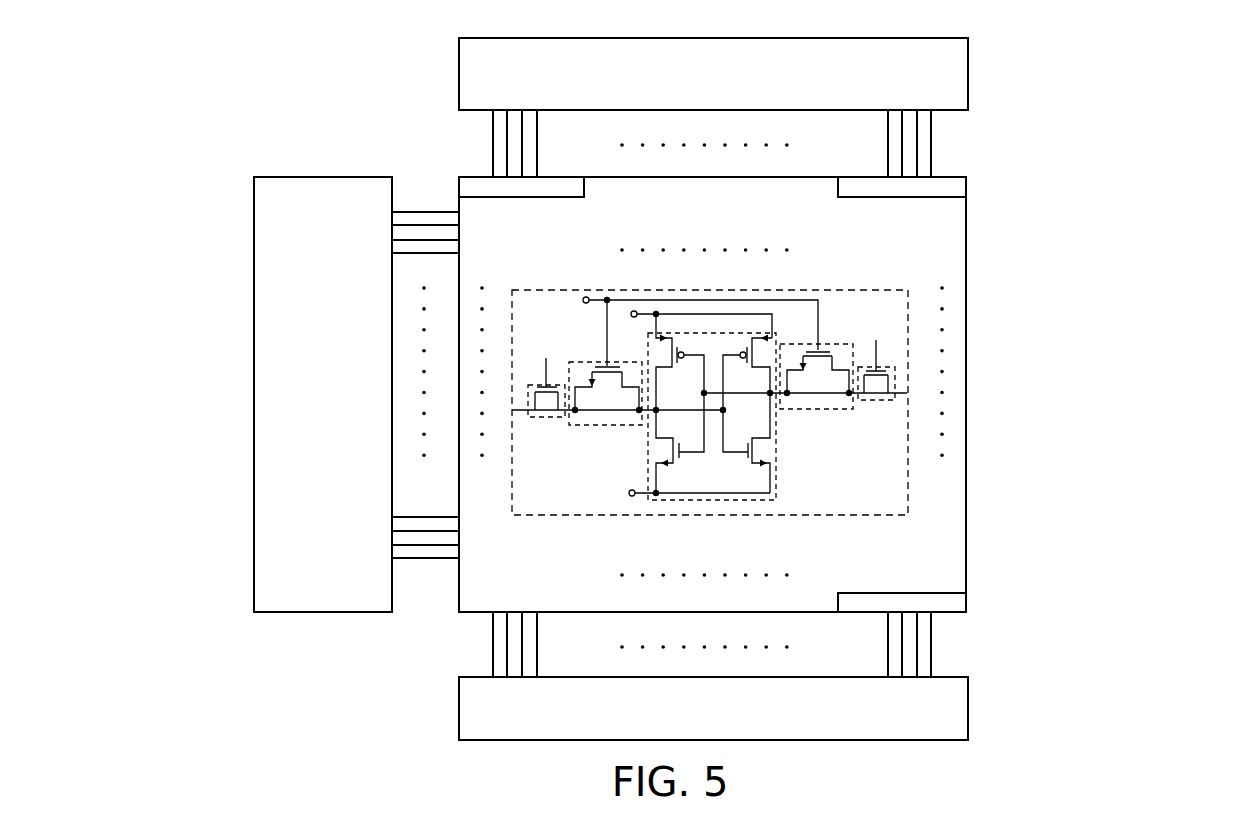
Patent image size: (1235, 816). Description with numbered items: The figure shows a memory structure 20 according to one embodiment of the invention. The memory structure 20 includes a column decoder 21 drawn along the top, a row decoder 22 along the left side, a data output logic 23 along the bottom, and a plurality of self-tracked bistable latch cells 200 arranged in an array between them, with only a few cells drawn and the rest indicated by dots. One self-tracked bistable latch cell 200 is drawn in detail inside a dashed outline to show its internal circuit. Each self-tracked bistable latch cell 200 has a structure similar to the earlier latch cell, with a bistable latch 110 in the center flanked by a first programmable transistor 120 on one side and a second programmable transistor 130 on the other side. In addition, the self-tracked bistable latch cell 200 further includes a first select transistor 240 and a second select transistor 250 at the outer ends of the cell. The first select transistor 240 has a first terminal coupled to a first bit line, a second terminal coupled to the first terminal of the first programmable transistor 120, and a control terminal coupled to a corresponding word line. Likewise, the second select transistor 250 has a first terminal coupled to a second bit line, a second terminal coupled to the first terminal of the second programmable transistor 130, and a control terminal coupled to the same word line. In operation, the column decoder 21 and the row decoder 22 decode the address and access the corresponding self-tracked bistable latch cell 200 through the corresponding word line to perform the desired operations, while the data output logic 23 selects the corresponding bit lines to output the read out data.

The memory structure 20 is at (1125, 78).
The column decoder 21 is at (968, 68).
The row decoder 22 is at (254, 290).
The data output logic 23 is at (968, 699).
The self-tracked bistable latch cell 200 is at (484, 187).
The bistable latch 110 is at (777, 482).
The first programmable transistor 120 is at (601, 428).
The second programmable transistor 130 is at (813, 411).
The first select transistor 240 is at (546, 420).
The second select transistor 250 is at (877, 401).